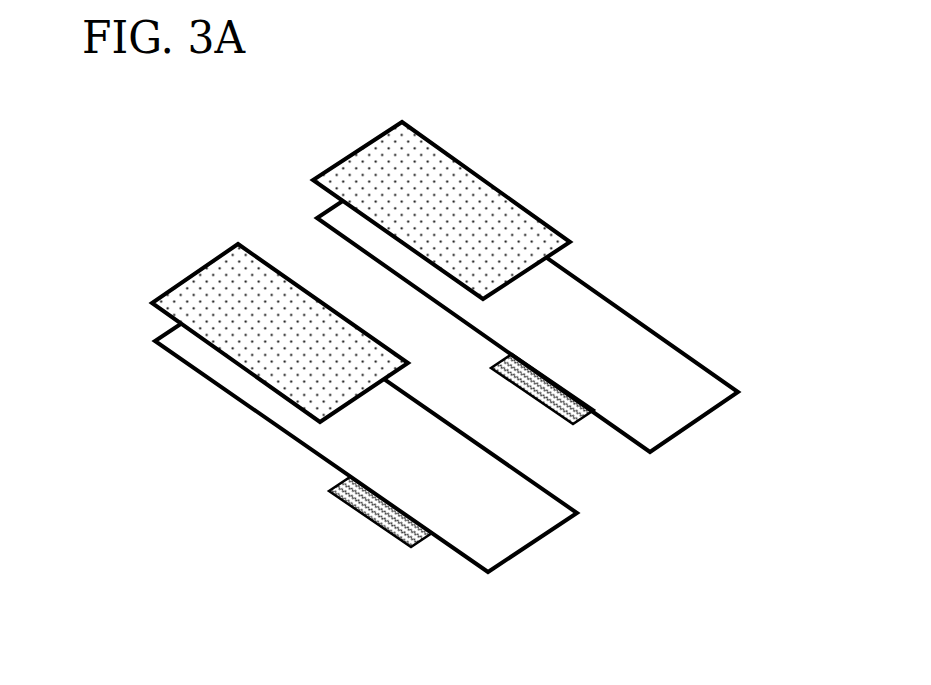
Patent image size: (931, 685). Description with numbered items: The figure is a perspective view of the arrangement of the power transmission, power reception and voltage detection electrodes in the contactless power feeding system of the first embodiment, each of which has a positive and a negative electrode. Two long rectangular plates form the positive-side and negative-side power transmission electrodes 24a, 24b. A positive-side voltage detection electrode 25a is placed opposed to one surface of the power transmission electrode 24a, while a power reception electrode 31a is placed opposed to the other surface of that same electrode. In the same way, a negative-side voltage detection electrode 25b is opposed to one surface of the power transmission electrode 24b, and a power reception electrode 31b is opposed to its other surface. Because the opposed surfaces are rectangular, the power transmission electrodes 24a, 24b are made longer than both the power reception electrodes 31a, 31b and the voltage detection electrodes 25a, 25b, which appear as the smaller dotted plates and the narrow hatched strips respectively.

The power transmission electrode 24a is at (523, 553).
The power transmission electrode 24b is at (705, 420).
The positive-side voltage detection electrode 25a is at (370, 527).
The negative-side voltage detection electrode 25b is at (567, 428).
The power reception electrode 31a is at (183, 281).
The power reception electrode 31b is at (377, 138).